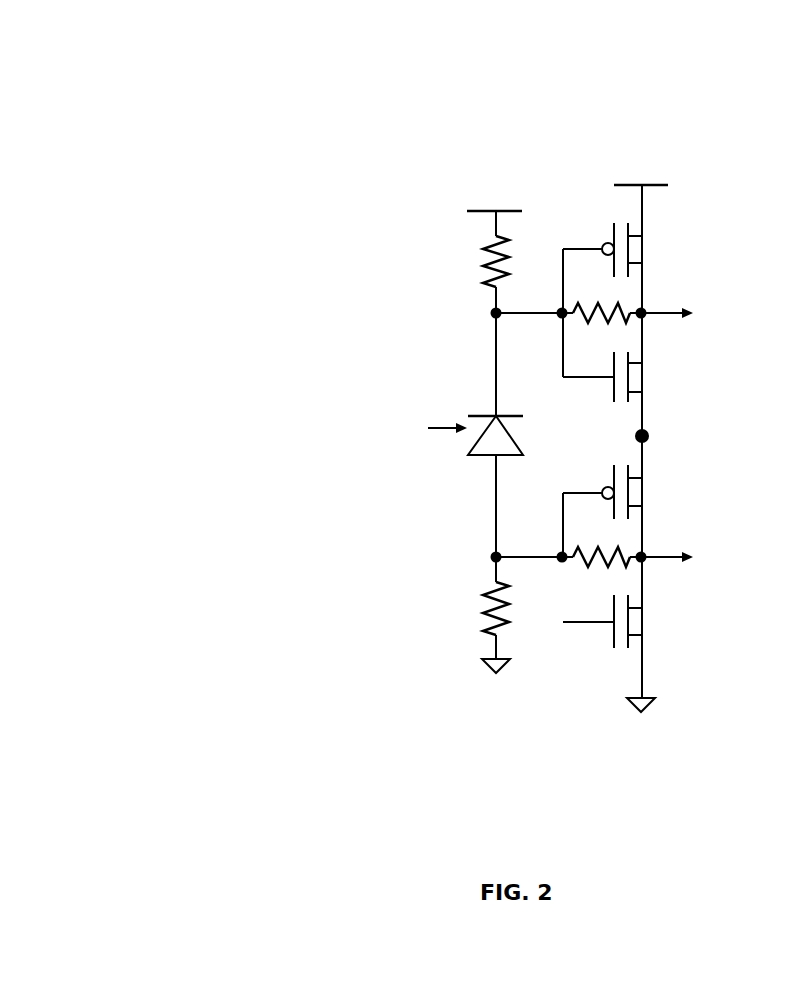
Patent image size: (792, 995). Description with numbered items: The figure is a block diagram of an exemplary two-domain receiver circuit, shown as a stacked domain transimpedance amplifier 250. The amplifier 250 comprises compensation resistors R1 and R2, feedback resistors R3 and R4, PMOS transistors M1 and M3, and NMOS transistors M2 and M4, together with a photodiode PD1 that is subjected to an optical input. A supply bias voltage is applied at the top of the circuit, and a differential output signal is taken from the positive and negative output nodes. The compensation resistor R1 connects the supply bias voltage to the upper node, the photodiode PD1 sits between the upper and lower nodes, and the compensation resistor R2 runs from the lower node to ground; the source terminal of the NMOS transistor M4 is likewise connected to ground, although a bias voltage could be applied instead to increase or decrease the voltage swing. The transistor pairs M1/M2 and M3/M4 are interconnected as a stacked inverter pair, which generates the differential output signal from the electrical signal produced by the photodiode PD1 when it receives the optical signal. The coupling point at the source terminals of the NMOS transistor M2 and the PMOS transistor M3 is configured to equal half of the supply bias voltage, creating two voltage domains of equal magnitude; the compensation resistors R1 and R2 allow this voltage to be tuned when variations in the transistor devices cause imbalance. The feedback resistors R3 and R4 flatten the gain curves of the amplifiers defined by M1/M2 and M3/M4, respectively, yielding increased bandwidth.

The stacked domain transimpedance amplifier 250 is at (128, 93).
The compensation resistor R1 is at (477, 261).
The compensation resistor R2 is at (479, 608).
The feedback resistor R3 is at (601, 302).
The feedback resistor R4 is at (601, 544).
The PMOS transistor M1 is at (609, 250).
The NMOS transistor M2 is at (609, 377).
The PMOS transistor M3 is at (609, 492).
The NMOS transistor M4 is at (609, 621).
The photodiode PD1 is at (512, 435).